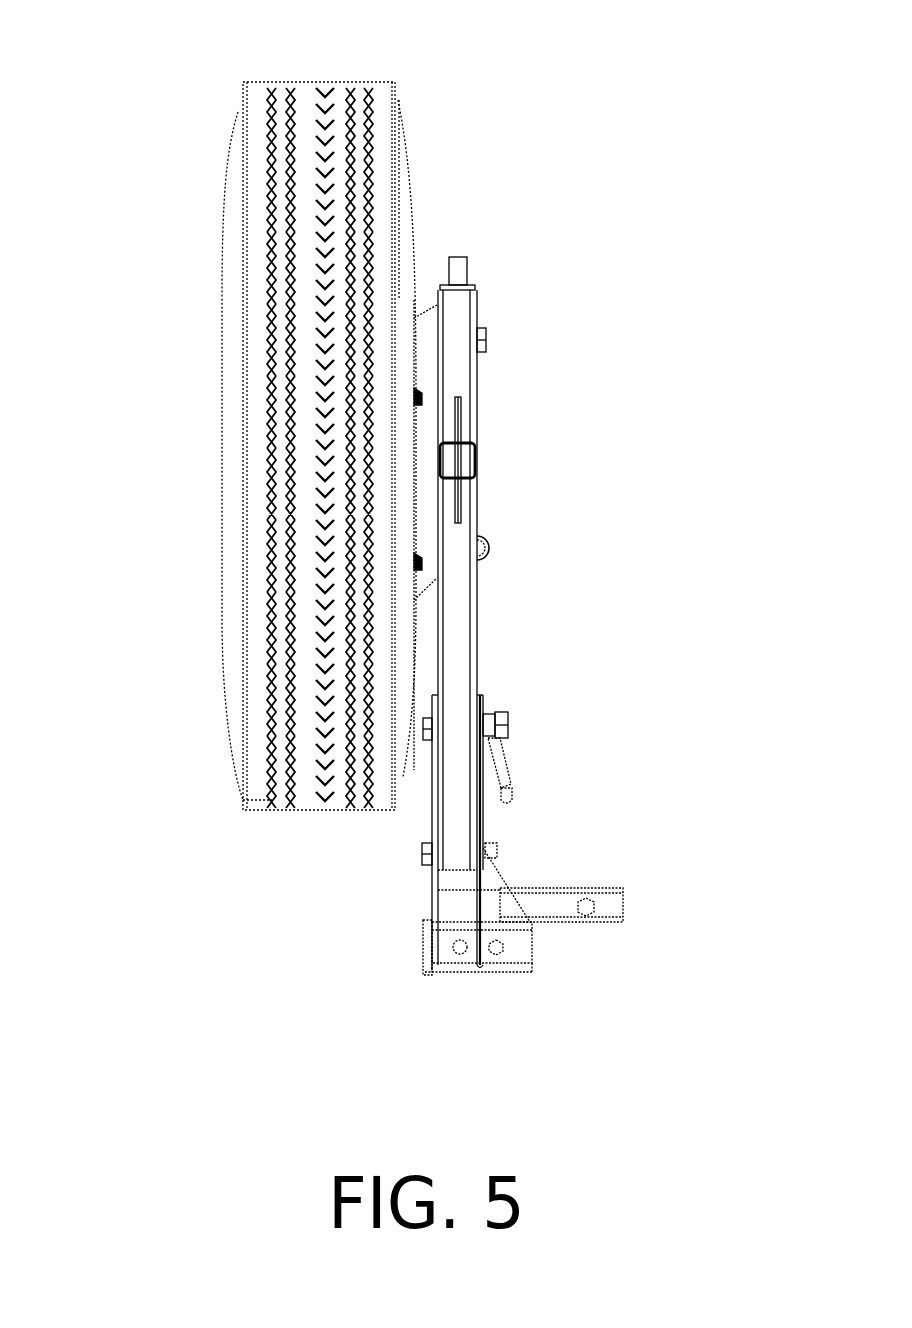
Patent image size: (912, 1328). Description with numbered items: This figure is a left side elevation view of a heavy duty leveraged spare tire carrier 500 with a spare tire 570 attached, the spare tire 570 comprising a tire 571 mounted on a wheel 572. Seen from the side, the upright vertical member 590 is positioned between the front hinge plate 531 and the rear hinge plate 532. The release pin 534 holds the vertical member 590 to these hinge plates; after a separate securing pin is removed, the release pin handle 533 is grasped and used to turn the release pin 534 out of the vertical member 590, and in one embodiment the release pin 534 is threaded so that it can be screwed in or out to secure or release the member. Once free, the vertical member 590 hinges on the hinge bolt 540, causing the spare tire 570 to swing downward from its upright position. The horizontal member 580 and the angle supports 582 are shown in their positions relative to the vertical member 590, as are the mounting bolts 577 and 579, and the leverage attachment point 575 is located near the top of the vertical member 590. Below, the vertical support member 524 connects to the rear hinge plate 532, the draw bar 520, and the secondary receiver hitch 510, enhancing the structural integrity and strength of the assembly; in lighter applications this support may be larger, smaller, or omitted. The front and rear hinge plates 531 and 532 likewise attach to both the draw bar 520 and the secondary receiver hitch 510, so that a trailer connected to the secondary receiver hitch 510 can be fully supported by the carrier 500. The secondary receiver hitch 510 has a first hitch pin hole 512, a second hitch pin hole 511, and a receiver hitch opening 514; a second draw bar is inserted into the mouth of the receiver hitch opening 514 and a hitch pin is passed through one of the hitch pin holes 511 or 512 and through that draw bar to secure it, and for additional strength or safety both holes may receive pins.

The heavy duty leveraged spare tire carrier 500 is at (250, 1103).
The secondary receiver hitch 510 is at (522, 945).
The second hitch pin hole 511 is at (496, 955).
The first hitch pin hole 512 is at (457, 950).
The receiver hitch opening 514 is at (398, 949).
The draw bar 520 is at (623, 891).
The vertical support member 524 is at (493, 877).
The front hinge plate 531 is at (432, 778).
The rear hinge plate 532 is at (480, 807).
The release pin handle 533 is at (503, 775).
The release pin 534 is at (503, 718).
The hinge bolt 540 is at (425, 848).
The spare tire 570 is at (163, 402).
The tire 571 is at (240, 85).
The wheel 572 is at (401, 318).
The leverage attachment point 575 is at (458, 257).
The mounting bolt 577 is at (485, 335).
The mounting bolt 579 is at (481, 547).
The horizontal member 580 is at (476, 479).
The angle supports 582 is at (458, 397).
The vertical member 590 is at (460, 613).